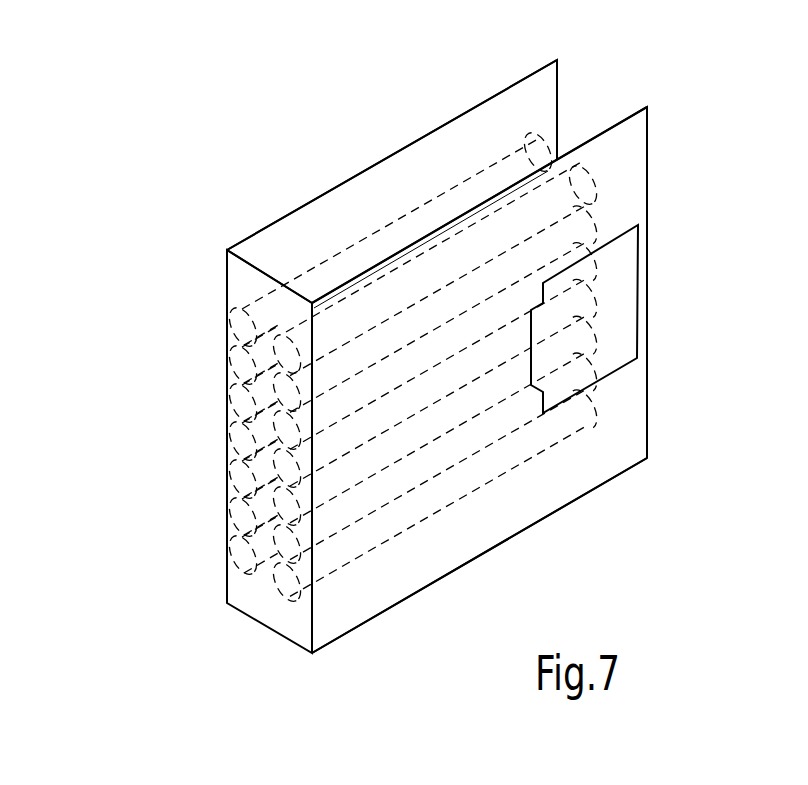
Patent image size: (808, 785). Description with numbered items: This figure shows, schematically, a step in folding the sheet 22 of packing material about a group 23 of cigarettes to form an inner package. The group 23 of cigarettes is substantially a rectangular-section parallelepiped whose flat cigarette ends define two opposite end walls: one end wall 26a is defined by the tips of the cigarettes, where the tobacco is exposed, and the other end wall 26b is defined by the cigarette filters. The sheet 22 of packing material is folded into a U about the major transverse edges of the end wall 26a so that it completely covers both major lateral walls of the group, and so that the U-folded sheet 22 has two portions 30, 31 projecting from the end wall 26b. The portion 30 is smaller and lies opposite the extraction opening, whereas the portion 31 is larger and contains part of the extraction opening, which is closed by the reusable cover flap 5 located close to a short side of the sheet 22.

The sheet of packing material 22 is at (360, 646).
The group of cigarettes 23 is at (342, 172).
The portion 30 is at (548, 100).
The portion 31 is at (633, 157).
The cover flap 5 is at (625, 340).
The end wall 26a is at (209, 430).
The end wall 26b is at (683, 252).